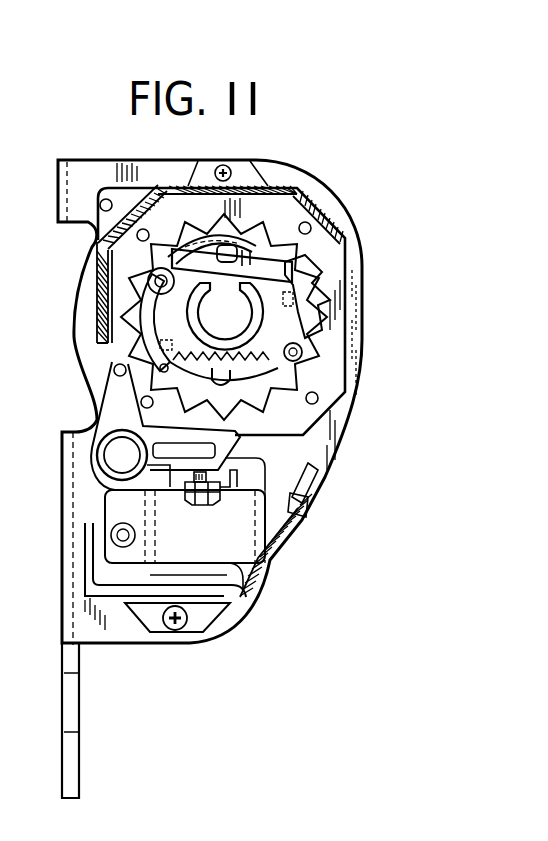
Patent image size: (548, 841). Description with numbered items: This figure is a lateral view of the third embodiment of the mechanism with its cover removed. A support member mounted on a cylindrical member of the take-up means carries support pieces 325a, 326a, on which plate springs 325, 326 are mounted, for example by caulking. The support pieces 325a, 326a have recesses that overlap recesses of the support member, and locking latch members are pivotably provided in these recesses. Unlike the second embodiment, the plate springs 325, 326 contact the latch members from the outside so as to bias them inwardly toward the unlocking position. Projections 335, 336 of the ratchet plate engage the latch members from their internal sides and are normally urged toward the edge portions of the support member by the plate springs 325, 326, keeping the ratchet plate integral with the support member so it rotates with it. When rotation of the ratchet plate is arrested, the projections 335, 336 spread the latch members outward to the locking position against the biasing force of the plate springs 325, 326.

The plate spring 325 is at (268, 240).
The support piece 325a is at (188, 258).
The plate spring 326 is at (152, 400).
The support piece 326a is at (257, 380).
The projection of the ratchet plate 335 is at (300, 300).
The projection of the ratchet plate 336 is at (137, 350).